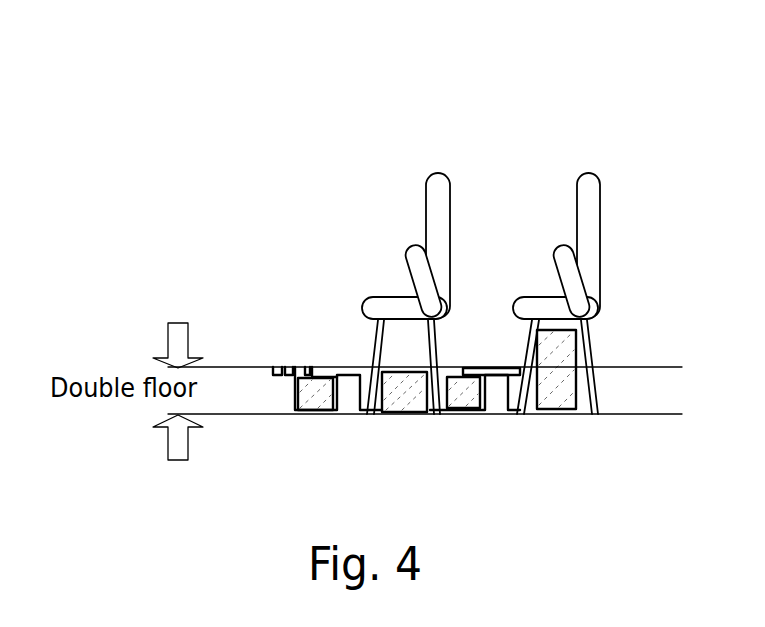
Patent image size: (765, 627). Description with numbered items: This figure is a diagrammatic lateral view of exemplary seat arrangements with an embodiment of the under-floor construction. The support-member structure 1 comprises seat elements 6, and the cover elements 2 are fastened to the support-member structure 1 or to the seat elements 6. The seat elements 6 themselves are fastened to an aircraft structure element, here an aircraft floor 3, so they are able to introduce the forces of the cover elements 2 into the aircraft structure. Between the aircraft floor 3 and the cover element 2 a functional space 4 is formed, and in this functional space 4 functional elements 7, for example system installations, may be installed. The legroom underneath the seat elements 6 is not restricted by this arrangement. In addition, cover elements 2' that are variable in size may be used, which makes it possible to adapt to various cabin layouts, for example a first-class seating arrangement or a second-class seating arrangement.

The support-member structure 1 is at (481, 221).
The seat elements 6 is at (588, 180).
The cover elements 2 is at (425, 350).
The cover elements 2' is at (389, 346).
The aircraft floor 3 is at (393, 415).
The functional space 4 is at (421, 415).
The functional elements 7 is at (318, 415).